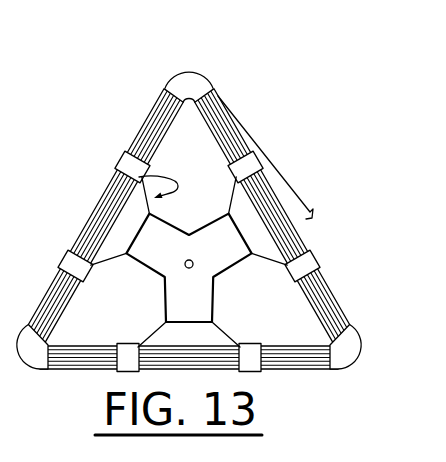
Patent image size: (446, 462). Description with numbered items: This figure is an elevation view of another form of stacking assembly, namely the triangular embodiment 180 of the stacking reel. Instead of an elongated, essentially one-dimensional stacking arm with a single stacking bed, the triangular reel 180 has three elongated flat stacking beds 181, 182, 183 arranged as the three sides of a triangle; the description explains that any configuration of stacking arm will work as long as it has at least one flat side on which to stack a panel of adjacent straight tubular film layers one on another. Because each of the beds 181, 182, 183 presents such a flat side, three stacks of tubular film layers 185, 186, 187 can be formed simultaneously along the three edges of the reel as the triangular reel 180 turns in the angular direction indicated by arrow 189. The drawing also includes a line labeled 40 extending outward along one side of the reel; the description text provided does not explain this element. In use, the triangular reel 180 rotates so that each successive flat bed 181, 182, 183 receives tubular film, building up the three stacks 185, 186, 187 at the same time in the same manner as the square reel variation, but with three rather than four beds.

The triangular embodiment 180 is at (230, 96).
The rod 40 is at (268, 160).
The elongated flat stacking bed 181 is at (158, 140).
The elongated flat stacking bed 182 is at (310, 298).
The elongated flat stacking bed 183 is at (74, 346).
The stack of tubular film layers 185 is at (88, 223).
The stack of tubular film layers 186 is at (300, 243).
The stack of tubular film layers 187 is at (276, 365).
The arrow 189 is at (133, 174).